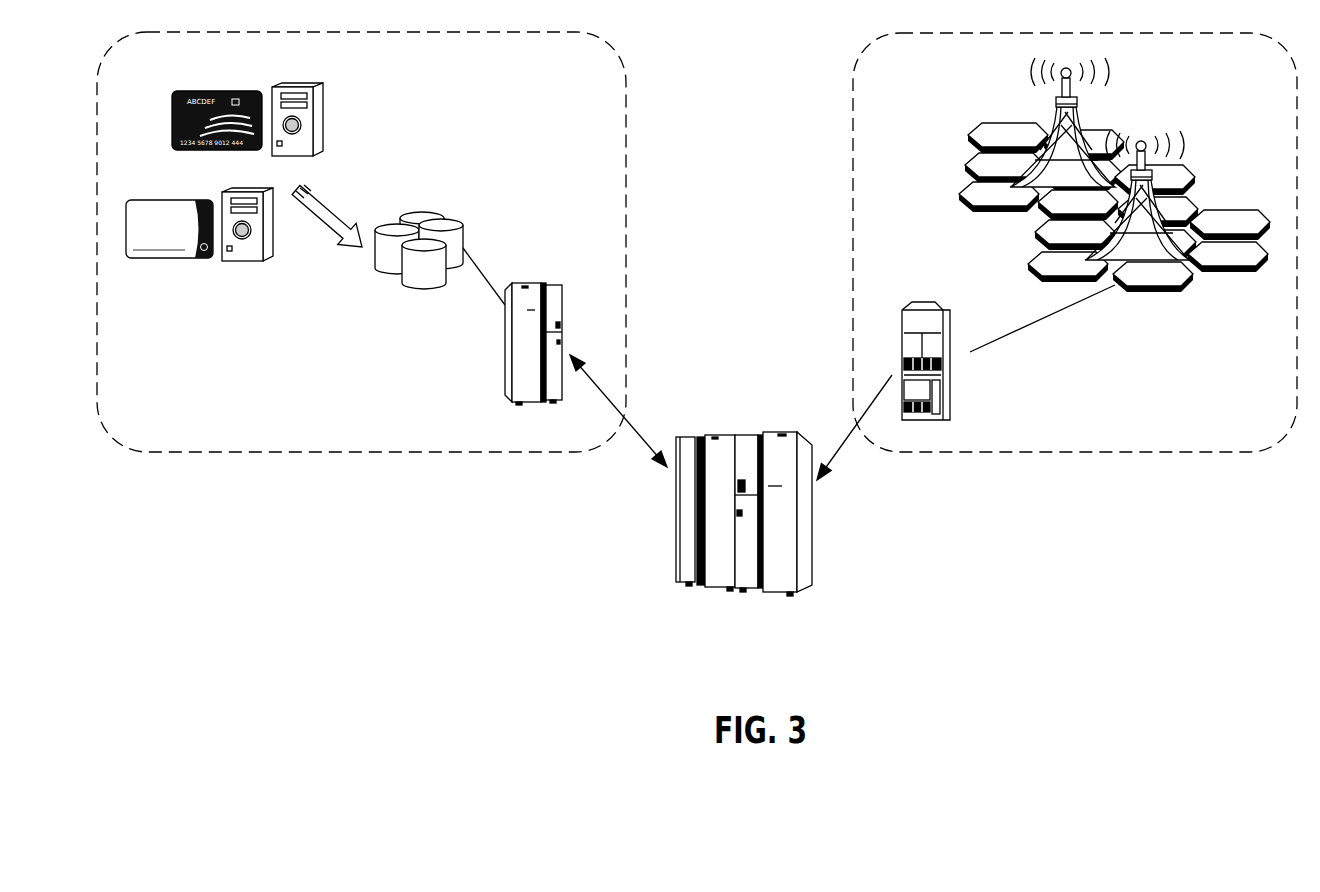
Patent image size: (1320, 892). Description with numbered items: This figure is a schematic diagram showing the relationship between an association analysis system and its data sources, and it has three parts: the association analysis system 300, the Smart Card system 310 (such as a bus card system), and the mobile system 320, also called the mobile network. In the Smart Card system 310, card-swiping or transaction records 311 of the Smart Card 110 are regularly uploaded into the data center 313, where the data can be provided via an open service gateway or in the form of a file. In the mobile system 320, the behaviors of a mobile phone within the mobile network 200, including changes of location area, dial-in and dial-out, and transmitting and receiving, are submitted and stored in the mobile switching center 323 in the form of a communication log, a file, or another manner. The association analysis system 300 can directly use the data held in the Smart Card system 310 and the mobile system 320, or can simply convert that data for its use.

The Smart Card 110 is at (150, 259).
The mobile network 200 is at (1236, 322).
The association analysis system 300 is at (812, 545).
The Smart Card system 310 is at (362, 452).
The transaction records 311 is at (415, 284).
The data center 313 is at (525, 283).
The mobile system 320 is at (1072, 452).
The mobile switching center 323 is at (950, 392).